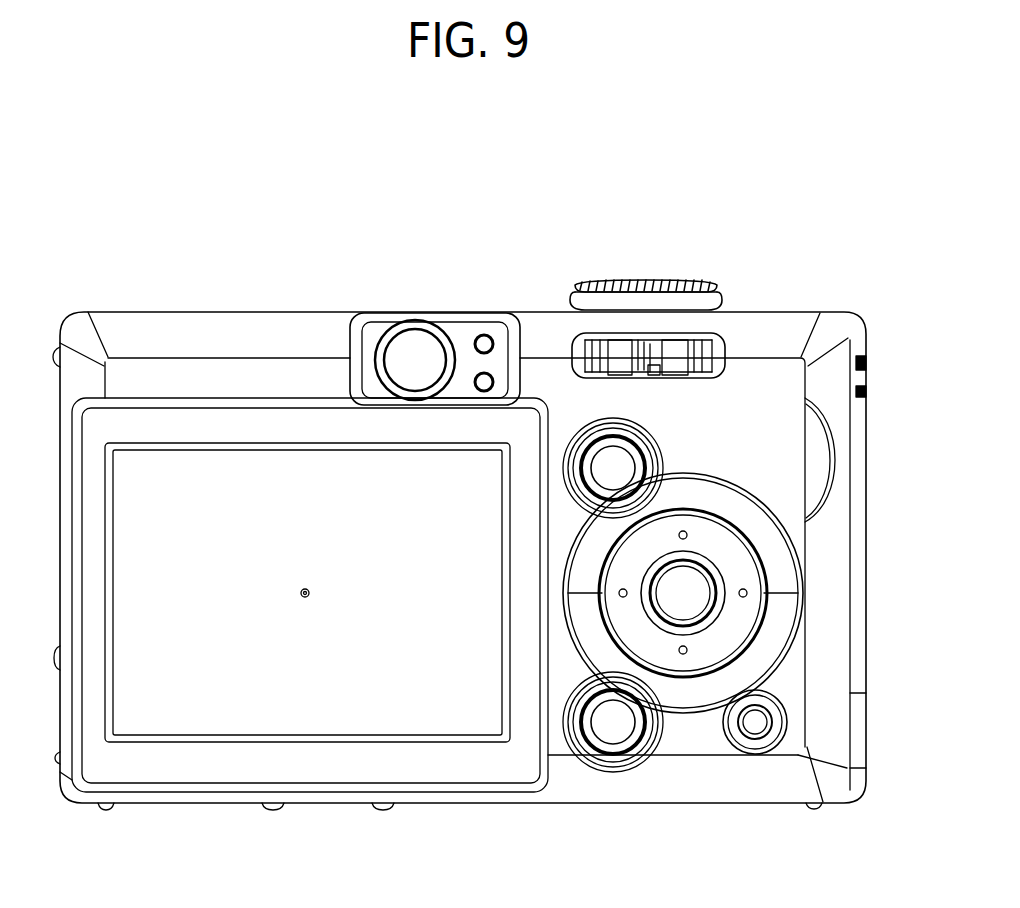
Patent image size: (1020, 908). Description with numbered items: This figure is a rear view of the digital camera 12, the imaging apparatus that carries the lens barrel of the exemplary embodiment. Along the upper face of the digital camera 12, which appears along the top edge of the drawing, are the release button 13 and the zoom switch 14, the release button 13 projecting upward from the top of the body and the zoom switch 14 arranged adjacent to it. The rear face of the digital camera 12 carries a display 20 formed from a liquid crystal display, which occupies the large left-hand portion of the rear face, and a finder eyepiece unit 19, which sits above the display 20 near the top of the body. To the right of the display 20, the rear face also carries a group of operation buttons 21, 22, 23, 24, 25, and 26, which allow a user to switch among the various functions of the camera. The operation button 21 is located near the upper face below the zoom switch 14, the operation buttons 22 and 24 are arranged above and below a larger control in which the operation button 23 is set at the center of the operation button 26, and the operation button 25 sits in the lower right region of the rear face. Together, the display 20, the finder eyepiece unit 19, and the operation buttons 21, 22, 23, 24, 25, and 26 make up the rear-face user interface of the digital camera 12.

The digital camera 12 is at (220, 332).
The release button 13 is at (650, 279).
The zoom switch 14 is at (684, 302).
The finder eyepiece unit 19 is at (420, 367).
The display 20 is at (168, 717).
The operation button 21 is at (672, 362).
The operation button 22 is at (616, 468).
The operation button 23 is at (684, 592).
The operation button 24 is at (615, 718).
The operation button 25 is at (757, 718).
The operation button 26 is at (738, 627).